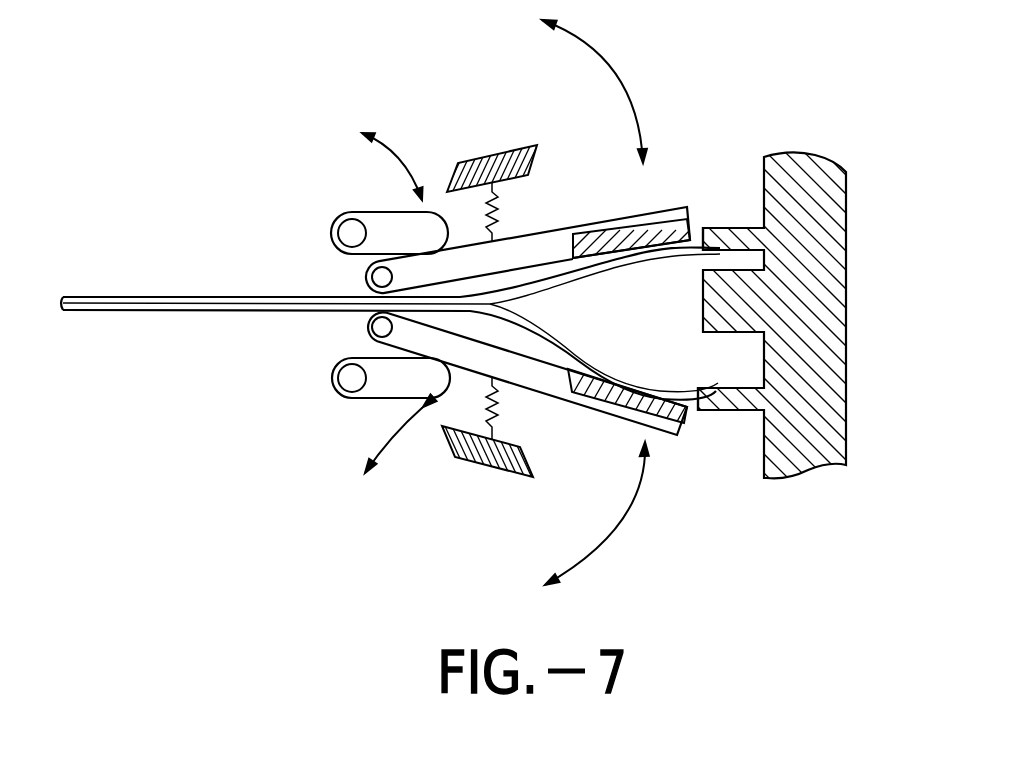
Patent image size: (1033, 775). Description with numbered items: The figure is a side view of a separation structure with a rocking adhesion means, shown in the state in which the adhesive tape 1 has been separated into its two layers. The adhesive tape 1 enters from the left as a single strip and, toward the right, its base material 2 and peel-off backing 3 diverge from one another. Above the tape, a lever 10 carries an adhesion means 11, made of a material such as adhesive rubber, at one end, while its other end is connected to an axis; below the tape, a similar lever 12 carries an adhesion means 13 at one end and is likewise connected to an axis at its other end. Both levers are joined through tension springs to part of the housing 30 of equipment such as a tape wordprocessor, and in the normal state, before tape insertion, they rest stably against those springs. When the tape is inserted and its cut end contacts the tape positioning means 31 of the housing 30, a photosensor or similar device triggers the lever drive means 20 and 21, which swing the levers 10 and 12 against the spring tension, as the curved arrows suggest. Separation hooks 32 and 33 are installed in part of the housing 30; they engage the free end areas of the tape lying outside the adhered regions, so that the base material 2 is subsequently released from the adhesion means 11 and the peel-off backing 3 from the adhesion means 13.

The adhesive tape 1 is at (390, 308).
The base material 2 is at (176, 296).
The peel-off backing 3 is at (156, 312).
The lever 10 is at (542, 212).
The adhesion means 11 is at (690, 230).
The lever 12 is at (545, 399).
The adhesion means 13 is at (678, 408).
The lever drive means 20 is at (372, 220).
The lever drive means 21 is at (388, 385).
The housing 30 is at (487, 168).
The tape positioning means 31 is at (699, 308).
The separation hook 32 is at (725, 230).
The separation hook 33 is at (733, 400).